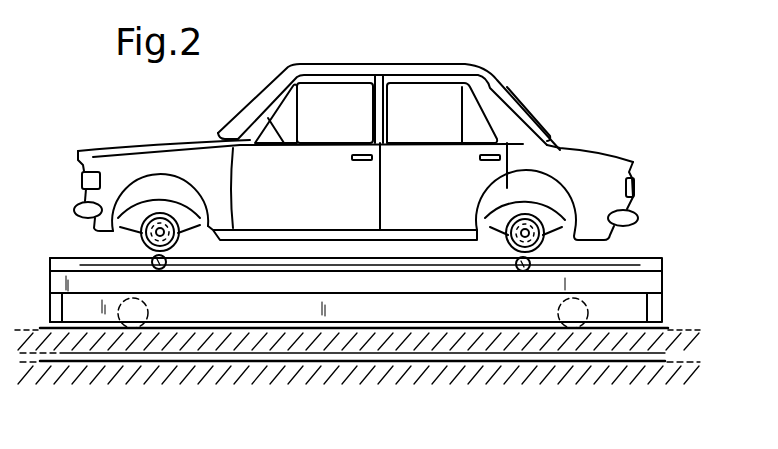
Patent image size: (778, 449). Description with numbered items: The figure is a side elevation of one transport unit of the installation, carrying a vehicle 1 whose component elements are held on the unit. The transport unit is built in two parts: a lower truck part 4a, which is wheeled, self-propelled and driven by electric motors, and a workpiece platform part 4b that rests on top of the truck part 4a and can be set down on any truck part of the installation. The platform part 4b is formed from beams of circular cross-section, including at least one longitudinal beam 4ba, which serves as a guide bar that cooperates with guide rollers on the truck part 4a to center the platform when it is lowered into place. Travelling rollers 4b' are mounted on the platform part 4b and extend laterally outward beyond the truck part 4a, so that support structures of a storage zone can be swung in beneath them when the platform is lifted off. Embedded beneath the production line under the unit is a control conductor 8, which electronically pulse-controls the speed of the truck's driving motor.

The vehicle 1 is at (518, 86).
The truck part 4a is at (374, 313).
The workpiece platform part 4b is at (370, 250).
The longitudinal beam 4ba is at (52, 257).
The travelling rollers 4b' is at (362, 276).
The control conductor 8 is at (554, 360).